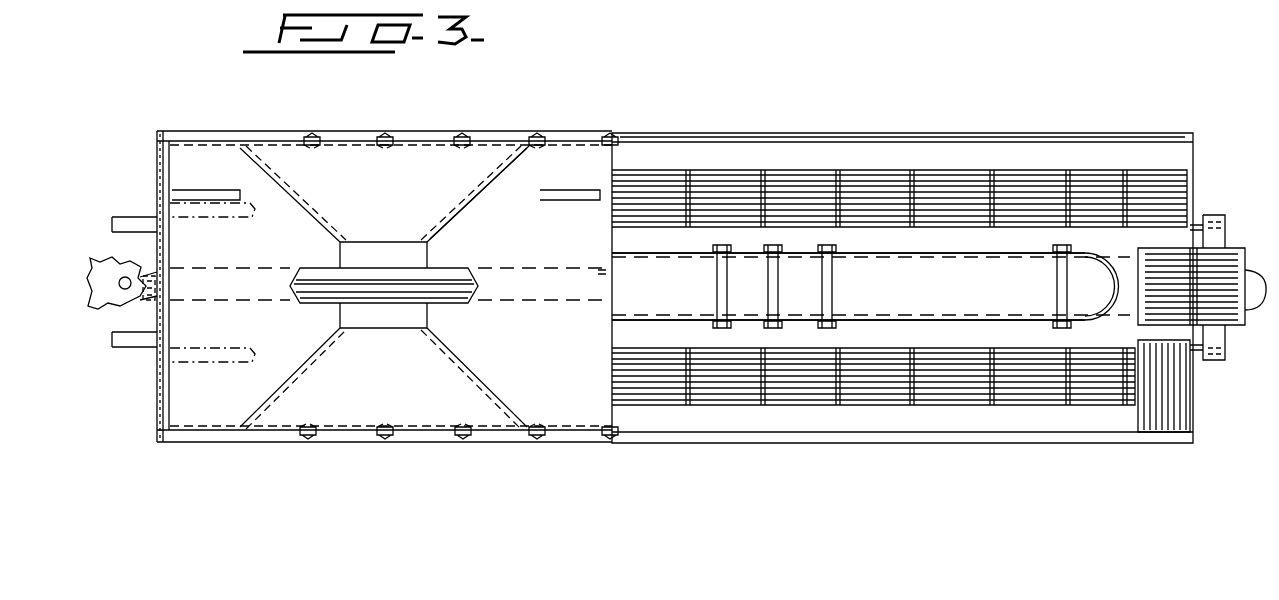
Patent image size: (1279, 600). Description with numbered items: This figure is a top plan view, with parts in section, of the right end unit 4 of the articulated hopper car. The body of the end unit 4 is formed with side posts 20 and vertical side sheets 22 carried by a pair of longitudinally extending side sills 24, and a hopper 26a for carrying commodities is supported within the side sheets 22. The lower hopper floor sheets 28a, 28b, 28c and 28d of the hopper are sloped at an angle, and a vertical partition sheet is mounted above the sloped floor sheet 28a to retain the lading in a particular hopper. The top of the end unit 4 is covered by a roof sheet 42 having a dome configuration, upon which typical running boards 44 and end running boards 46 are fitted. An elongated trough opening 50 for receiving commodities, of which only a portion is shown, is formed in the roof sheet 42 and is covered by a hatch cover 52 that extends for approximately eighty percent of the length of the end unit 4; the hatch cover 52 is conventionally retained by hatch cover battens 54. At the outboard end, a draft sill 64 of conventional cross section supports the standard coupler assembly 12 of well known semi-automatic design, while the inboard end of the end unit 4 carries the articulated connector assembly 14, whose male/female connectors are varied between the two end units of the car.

The end unit 4 is at (913, 125).
The coupler assembly 12 is at (1253, 283).
The articulated connector assembly 14 is at (112, 270).
The side posts 20 is at (378, 137).
The vertical side sheets 22 is at (556, 133).
The side sills 24 is at (222, 133).
The hopper 26a is at (478, 162).
The lower hopper floor sheet 28a is at (537, 252).
The lower hopper floor sheet 28b is at (292, 248).
The lower hopper floor sheet 28c is at (407, 197).
The lower hopper floor sheet 28d is at (402, 402).
The roof sheet 42 is at (1147, 152).
The running boards 44 is at (985, 380).
The end running boards 46 is at (1162, 277).
The trough opening 50 is at (985, 275).
The hatch cover 52 is at (898, 292).
The hatch cover battens 54 is at (765, 290).
The draft sill 64 is at (258, 302).